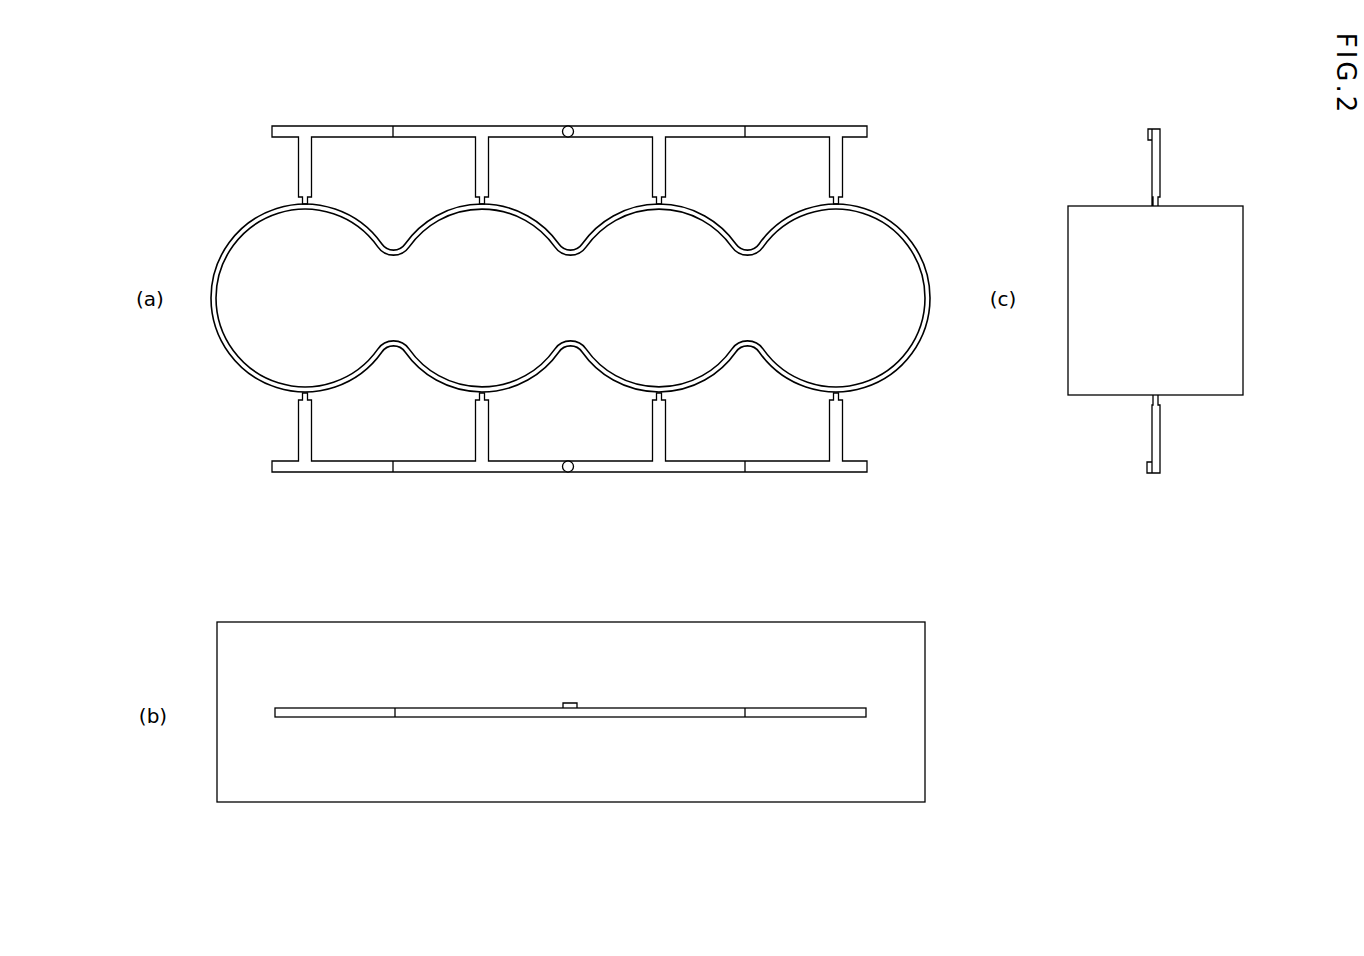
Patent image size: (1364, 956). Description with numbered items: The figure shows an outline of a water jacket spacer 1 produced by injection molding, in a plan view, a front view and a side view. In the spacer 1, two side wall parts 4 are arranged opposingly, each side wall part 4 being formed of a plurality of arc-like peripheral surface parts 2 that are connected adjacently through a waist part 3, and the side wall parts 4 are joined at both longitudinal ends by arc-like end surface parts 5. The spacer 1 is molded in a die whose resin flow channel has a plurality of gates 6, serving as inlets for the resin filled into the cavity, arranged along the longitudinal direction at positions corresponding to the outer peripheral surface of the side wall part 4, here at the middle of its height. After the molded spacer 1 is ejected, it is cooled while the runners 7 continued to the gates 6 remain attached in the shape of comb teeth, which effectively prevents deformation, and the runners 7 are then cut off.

The spacer 1 is at (897, 92).
The arc-like peripheral surface part 2 is at (520, 222).
The waist part 3 is at (395, 243).
The side wall part 4 is at (507, 66).
The arc-like end surface part 5 is at (250, 228).
The gate 6 is at (662, 200).
The runner 7 is at (622, 131).